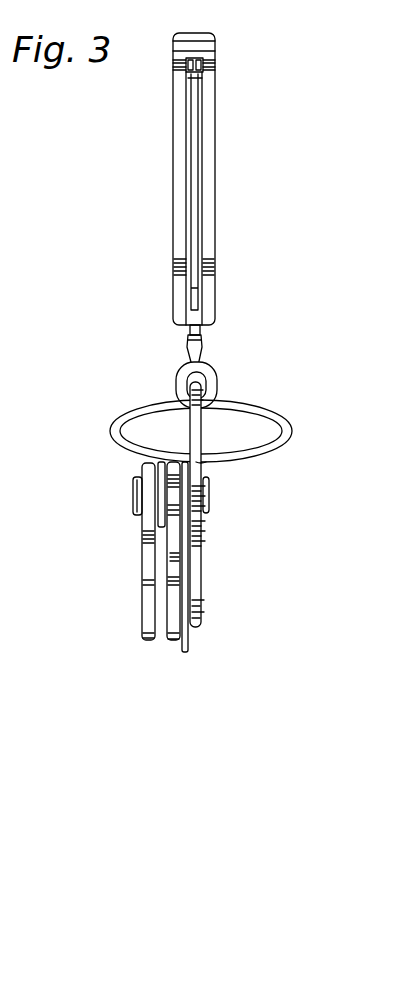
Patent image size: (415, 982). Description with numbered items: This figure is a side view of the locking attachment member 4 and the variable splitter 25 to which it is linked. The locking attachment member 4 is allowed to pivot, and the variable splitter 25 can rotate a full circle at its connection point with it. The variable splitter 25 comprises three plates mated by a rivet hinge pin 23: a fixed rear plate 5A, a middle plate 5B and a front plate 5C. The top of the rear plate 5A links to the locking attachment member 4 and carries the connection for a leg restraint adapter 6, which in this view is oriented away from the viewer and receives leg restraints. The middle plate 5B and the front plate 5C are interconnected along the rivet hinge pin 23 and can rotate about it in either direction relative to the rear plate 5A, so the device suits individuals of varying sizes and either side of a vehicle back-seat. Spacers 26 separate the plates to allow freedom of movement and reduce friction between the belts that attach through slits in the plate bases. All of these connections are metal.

The locking attachment member 4 is at (214, 52).
The leg restraint adapter 6 is at (150, 405).
The rivet hinge pin 23 is at (209, 488).
The variable splitter 25 is at (206, 463).
The spacers 26 is at (185, 655).
The rear plate 5A is at (201, 555).
The middle plate 5B is at (176, 645).
The front plate 5C is at (147, 645).